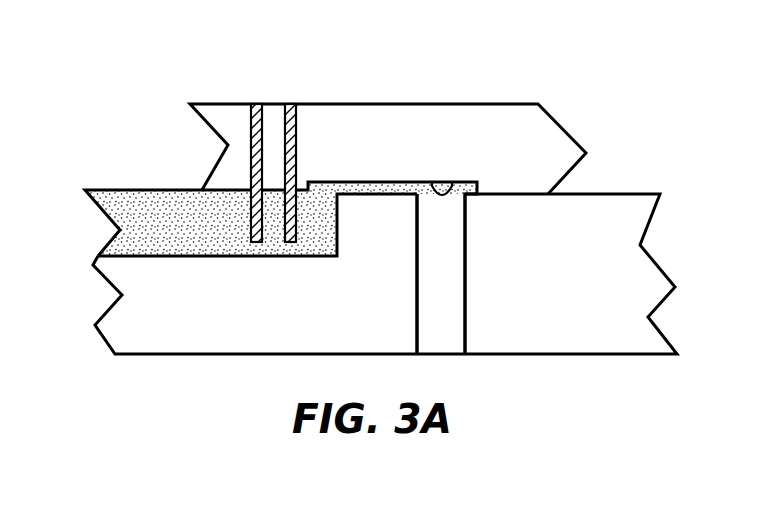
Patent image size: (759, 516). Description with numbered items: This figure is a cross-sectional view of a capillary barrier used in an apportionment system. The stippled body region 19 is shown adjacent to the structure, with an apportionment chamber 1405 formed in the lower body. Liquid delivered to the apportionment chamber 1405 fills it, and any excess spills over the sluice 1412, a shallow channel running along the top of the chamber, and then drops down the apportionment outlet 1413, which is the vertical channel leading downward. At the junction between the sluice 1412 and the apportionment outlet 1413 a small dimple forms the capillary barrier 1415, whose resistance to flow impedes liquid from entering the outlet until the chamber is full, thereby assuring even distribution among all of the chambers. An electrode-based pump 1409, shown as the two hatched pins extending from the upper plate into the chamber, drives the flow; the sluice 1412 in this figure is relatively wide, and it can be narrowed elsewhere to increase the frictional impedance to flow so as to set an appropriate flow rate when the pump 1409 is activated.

The flexible member / adhesive layer 19 is at (142, 202).
The apportionment chamber 1405 is at (217, 257).
The electrode-based pump 1409 is at (252, 128).
The sluice 1412 is at (335, 182).
The apportionment outlet 1413 is at (452, 295).
The capillary barrier 1415 is at (455, 183).